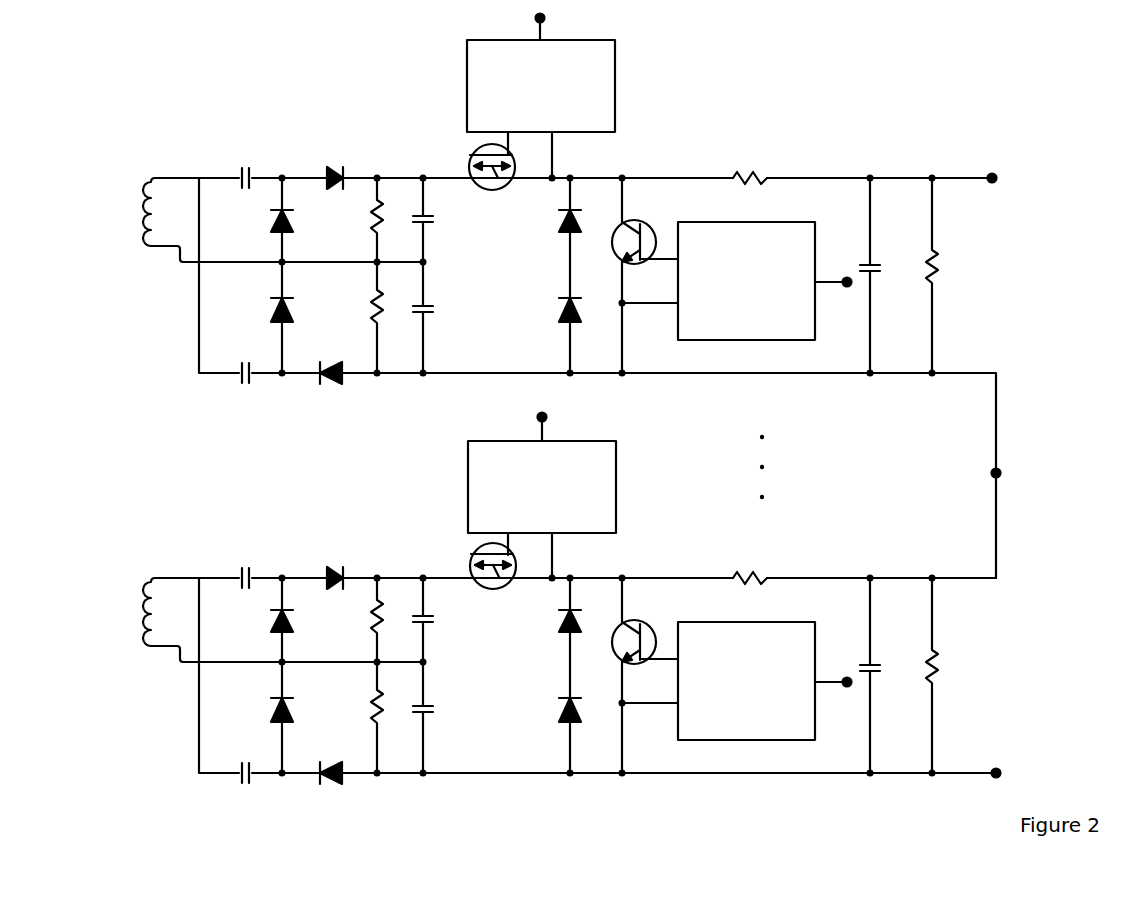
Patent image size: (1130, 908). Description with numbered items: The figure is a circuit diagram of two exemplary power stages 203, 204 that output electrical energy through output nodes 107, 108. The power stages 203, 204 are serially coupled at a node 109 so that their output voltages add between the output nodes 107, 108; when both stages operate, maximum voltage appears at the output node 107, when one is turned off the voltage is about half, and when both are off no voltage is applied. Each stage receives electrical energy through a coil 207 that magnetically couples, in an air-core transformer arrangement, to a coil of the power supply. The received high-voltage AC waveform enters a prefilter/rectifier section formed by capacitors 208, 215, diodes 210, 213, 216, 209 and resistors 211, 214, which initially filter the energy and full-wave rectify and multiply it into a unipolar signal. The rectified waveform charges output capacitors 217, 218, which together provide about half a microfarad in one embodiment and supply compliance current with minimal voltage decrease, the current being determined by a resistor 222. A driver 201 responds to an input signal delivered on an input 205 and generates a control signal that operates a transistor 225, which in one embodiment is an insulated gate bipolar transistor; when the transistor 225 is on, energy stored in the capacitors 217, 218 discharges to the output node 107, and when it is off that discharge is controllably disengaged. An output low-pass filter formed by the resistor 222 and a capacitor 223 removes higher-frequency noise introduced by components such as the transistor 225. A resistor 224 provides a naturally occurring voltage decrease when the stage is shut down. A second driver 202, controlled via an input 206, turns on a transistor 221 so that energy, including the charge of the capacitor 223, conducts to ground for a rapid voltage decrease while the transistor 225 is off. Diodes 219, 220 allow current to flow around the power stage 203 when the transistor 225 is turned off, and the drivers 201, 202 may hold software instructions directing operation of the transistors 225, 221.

The power stage 203 is at (948, 125).
The power stage 204 is at (212, 487).
The output node 107 is at (1000, 182).
The output node 108 is at (1002, 770).
The node 109 is at (1002, 473).
The driver 201 is at (524, 118).
The driver 202 is at (729, 305).
The input 205 is at (532, 16).
The input 206 is at (849, 277).
The coil 207 is at (142, 204).
The capacitor 208 is at (238, 172).
The diode 209 is at (320, 170).
The diode 210 is at (268, 233).
The resistor 211 is at (367, 226).
The diode 213 is at (268, 318).
The resistor 214 is at (364, 317).
The capacitor 215 is at (238, 386).
The diode 216 is at (338, 388).
The output capacitor 217 is at (434, 229).
The output capacitor 218 is at (435, 313).
The diode 219 is at (556, 228).
The diode 220 is at (556, 316).
The transistor 221 is at (654, 222).
The resistor 222 is at (750, 170).
The capacitor 223 is at (883, 268).
The resistor 224 is at (943, 268).
The transistor 225 is at (467, 154).